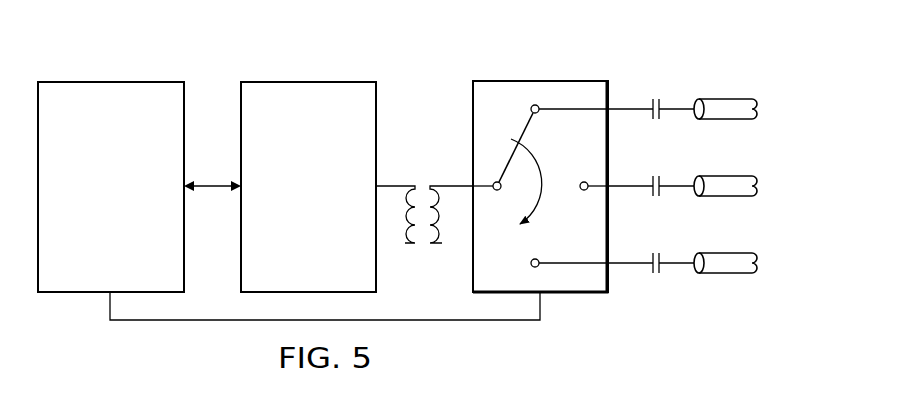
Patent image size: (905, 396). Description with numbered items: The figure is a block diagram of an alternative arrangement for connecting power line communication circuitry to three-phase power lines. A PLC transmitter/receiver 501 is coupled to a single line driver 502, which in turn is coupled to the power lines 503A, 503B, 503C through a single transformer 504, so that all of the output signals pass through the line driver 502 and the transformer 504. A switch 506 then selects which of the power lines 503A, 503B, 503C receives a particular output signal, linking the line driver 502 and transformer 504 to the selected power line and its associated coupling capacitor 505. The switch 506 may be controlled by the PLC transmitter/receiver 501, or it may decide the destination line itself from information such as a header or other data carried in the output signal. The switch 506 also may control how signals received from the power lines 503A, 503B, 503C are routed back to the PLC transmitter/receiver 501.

The PLC transmitter/receiver 501 is at (92, 240).
The line driver 502 is at (290, 218).
The transformer 504 is at (420, 180).
The switch 506 is at (552, 77).
The coupling capacitor 505 is at (656, 93).
The power line 503A is at (726, 98).
The power line 503B is at (726, 175).
The power line 503C is at (726, 274).